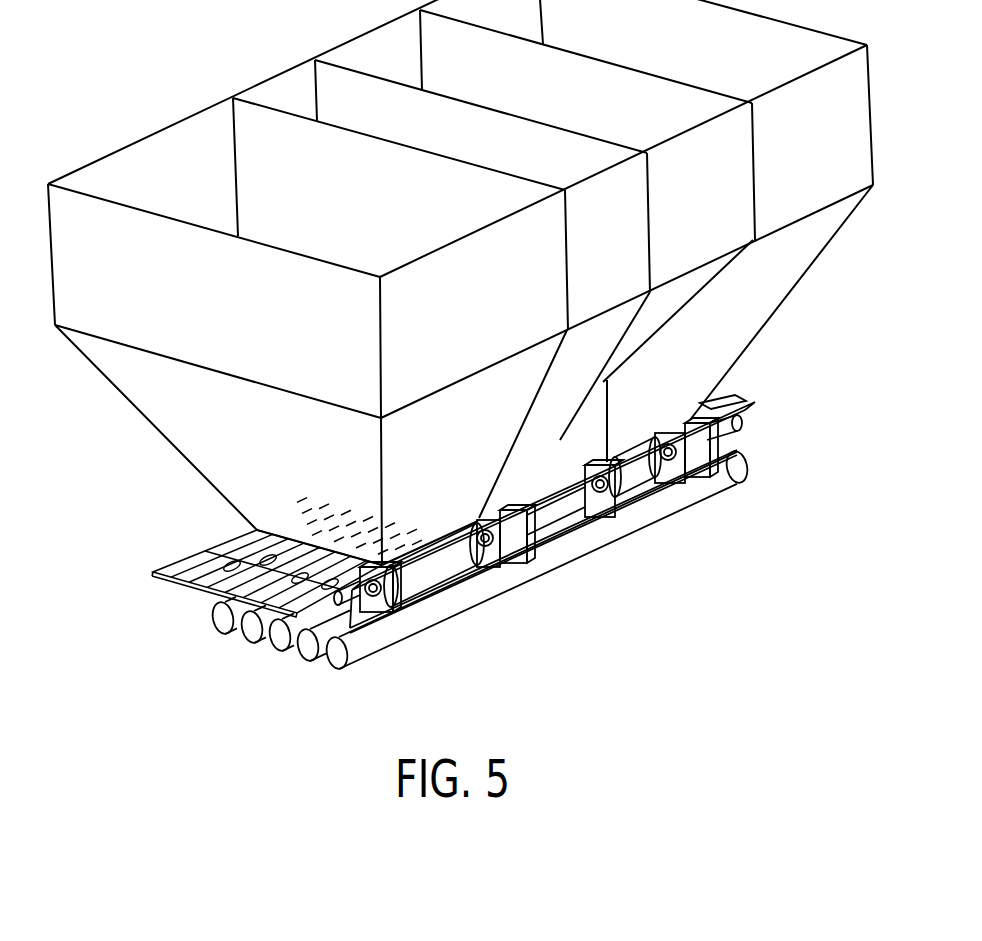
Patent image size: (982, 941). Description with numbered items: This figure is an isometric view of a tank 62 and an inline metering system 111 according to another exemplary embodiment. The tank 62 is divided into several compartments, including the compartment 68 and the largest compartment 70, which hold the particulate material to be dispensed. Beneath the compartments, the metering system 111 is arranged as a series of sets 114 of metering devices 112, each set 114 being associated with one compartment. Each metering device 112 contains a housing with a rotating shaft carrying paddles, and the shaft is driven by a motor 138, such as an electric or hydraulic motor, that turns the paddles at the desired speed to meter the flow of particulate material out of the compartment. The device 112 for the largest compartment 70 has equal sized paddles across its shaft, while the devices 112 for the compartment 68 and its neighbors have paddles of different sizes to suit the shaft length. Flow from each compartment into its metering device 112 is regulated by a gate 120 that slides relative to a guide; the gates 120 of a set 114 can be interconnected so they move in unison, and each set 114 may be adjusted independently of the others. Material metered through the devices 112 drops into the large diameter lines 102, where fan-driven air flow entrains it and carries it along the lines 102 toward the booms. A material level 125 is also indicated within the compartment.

The tank 62 is at (190, 95).
The compartment 68 is at (282, 73).
The compartment 70 is at (142, 139).
The lines 102 is at (250, 643).
The inline metering system 111 is at (747, 410).
The metering device 112 is at (443, 563).
The set 114 is at (420, 624).
The gate 120 is at (208, 553).
The material level 125 is at (320, 503).
The motor 138 is at (743, 432).